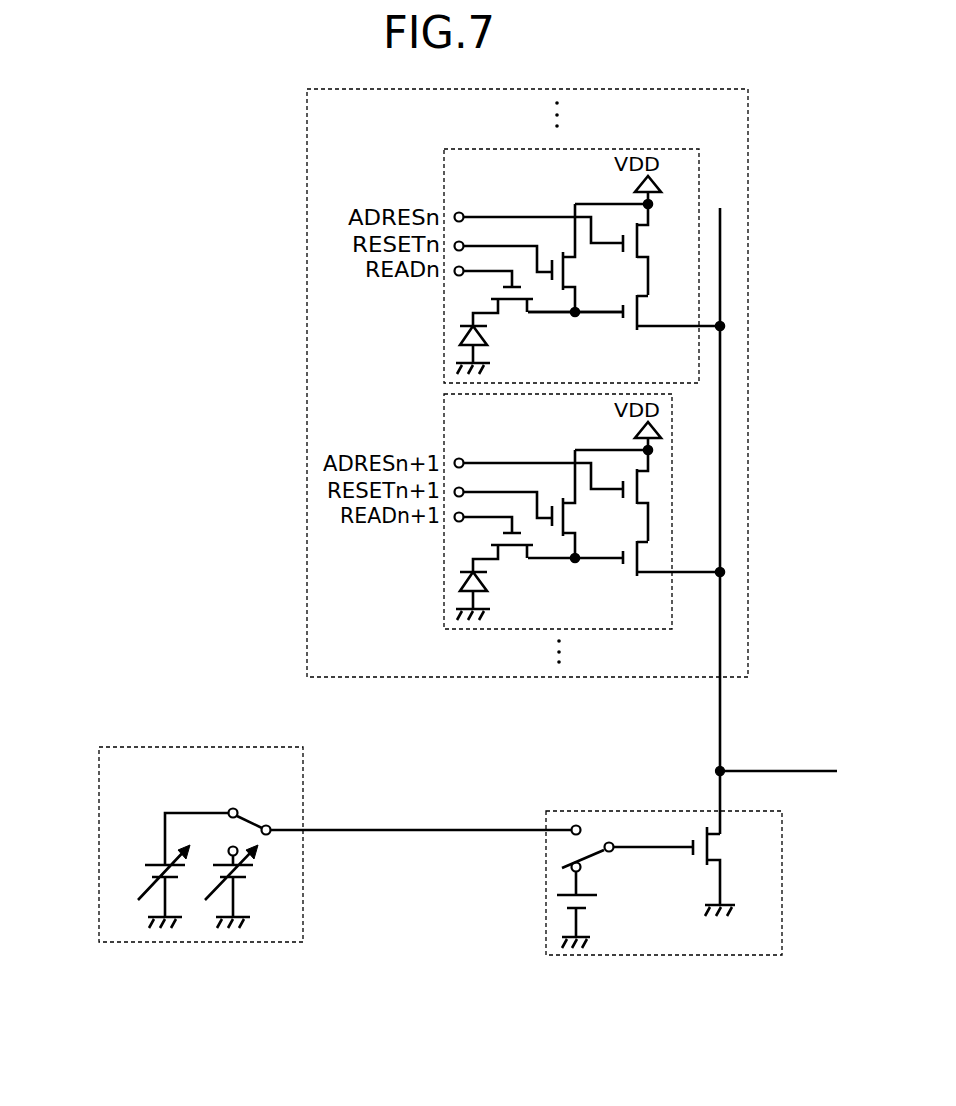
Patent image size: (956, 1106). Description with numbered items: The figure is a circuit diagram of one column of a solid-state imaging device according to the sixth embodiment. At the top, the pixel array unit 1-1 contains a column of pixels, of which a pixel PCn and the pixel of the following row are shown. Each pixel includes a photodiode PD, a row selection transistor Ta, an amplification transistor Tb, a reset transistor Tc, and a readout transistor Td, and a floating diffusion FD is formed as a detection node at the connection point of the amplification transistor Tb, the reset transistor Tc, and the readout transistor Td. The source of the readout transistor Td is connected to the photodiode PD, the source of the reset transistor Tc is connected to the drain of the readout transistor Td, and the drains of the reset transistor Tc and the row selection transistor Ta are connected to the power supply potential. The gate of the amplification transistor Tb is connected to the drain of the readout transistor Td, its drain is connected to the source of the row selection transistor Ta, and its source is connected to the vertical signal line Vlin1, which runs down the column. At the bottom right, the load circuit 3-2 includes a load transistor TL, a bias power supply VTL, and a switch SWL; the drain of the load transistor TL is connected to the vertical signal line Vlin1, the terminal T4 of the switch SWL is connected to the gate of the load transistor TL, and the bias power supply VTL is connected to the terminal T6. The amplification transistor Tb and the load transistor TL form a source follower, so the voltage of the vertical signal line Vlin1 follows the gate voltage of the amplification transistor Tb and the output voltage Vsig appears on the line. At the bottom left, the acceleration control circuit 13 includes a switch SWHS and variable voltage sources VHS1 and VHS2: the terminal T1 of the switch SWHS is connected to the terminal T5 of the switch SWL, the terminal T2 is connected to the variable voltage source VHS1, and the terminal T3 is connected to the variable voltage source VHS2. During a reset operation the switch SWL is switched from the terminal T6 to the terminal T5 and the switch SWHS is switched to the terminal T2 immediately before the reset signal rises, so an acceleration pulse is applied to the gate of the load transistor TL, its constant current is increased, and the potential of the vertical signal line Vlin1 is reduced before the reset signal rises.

The pixel array unit 1-1 is at (748, 172).
The acceleration control circuit 13 is at (305, 882).
The load circuit 3-2 is at (783, 880).
The pixel PCn is at (444, 158).
The row selection transistor Ta is at (640, 243).
The amplification transistor Tb is at (640, 311).
The reset transistor Tc is at (566, 268).
The readout transistor Td is at (517, 302).
The floating diffusion FD is at (575, 320).
The photodiode PD is at (458, 333).
The vertical signal line Vlin1 is at (721, 692).
The output voltage Vsig is at (777, 759).
The switch SWHS is at (252, 822).
The terminal T1 is at (267, 838).
The terminal T2 is at (228, 809).
The terminal T3 is at (230, 846).
The variable voltage source VHS1 is at (145, 868).
The variable voltage source VHS2 is at (248, 868).
The terminal T4 is at (612, 841).
The terminal T5 is at (578, 823).
The terminal T6 is at (582, 867).
The switch SWL is at (560, 860).
The bias power supply VTL is at (556, 893).
The load transistor TL is at (711, 846).